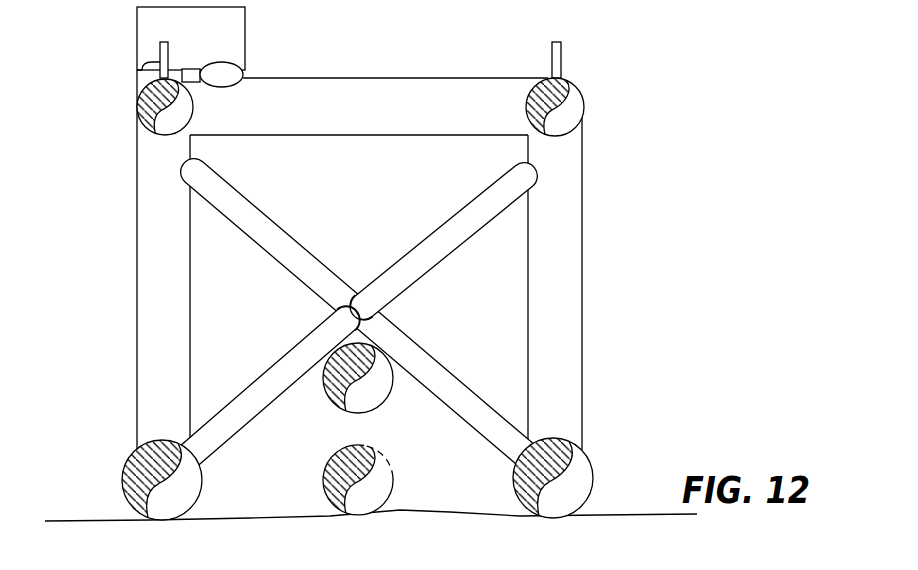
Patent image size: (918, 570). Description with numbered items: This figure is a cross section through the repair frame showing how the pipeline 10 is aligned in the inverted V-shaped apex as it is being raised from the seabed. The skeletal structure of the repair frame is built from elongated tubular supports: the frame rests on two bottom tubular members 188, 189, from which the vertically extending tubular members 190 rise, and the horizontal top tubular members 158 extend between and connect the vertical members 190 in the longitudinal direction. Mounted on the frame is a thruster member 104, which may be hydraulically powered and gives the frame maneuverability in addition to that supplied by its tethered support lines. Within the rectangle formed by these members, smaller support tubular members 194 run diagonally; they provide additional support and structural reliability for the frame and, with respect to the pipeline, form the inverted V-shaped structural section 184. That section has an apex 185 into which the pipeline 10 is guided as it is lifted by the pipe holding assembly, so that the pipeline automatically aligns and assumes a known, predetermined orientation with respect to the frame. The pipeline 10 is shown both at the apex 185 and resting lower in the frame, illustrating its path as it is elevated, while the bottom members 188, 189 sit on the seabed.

The pipeline 10 is at (375, 410).
The thruster member 104 is at (240, 50).
The horizontal top tubular member 158 is at (137, 107).
The inverted V-shaped structural section 184 is at (303, 394).
The apex 185 is at (363, 338).
The tubular member 188 is at (188, 505).
The tubular member 189 is at (596, 492).
The vertically extending tubular member 190 is at (137, 243).
The smaller support tubular member 194 is at (400, 263).